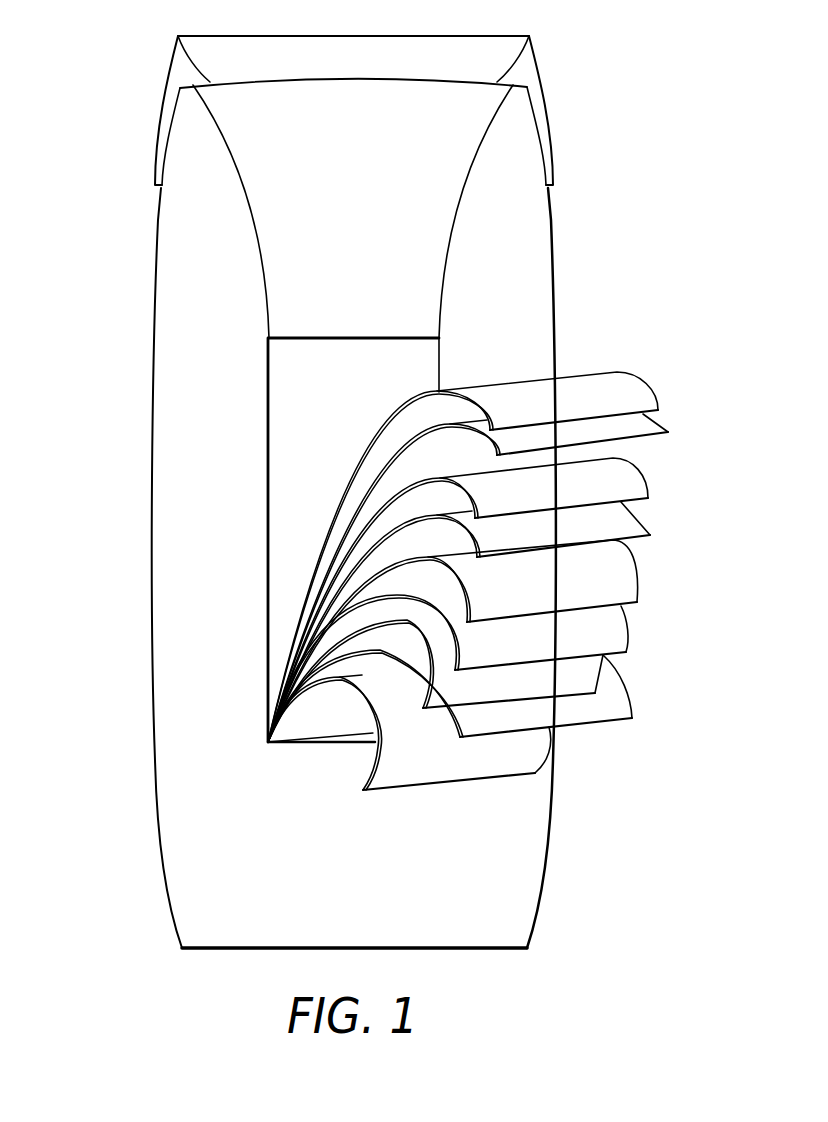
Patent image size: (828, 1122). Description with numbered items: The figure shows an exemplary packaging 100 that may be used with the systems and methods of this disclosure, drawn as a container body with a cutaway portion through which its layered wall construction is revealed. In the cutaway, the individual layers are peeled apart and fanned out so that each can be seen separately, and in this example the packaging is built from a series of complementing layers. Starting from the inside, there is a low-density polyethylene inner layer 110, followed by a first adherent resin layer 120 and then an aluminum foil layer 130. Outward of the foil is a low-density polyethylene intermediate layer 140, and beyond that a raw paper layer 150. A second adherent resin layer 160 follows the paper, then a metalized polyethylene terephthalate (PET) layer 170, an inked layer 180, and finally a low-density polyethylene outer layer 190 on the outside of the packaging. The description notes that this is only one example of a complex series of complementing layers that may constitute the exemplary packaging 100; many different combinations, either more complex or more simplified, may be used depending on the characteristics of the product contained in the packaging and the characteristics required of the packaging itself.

The exemplary packaging 100 is at (123, 178).
The low-density polyethylene inner layer 110 is at (655, 395).
The first adherent resin layer 120 is at (637, 423).
The aluminum foil layer 130 is at (617, 478).
The low-density polyethylene intermediate layer 140 is at (617, 522).
The raw paper layer 150 is at (618, 578).
The second adherent resin layer 160 is at (612, 627).
The metalized polyethylene terephthalate (PET) layer 170 is at (578, 673).
The inked layer 180 is at (607, 705).
The low-density polyethylene outer layer 190 is at (528, 745).